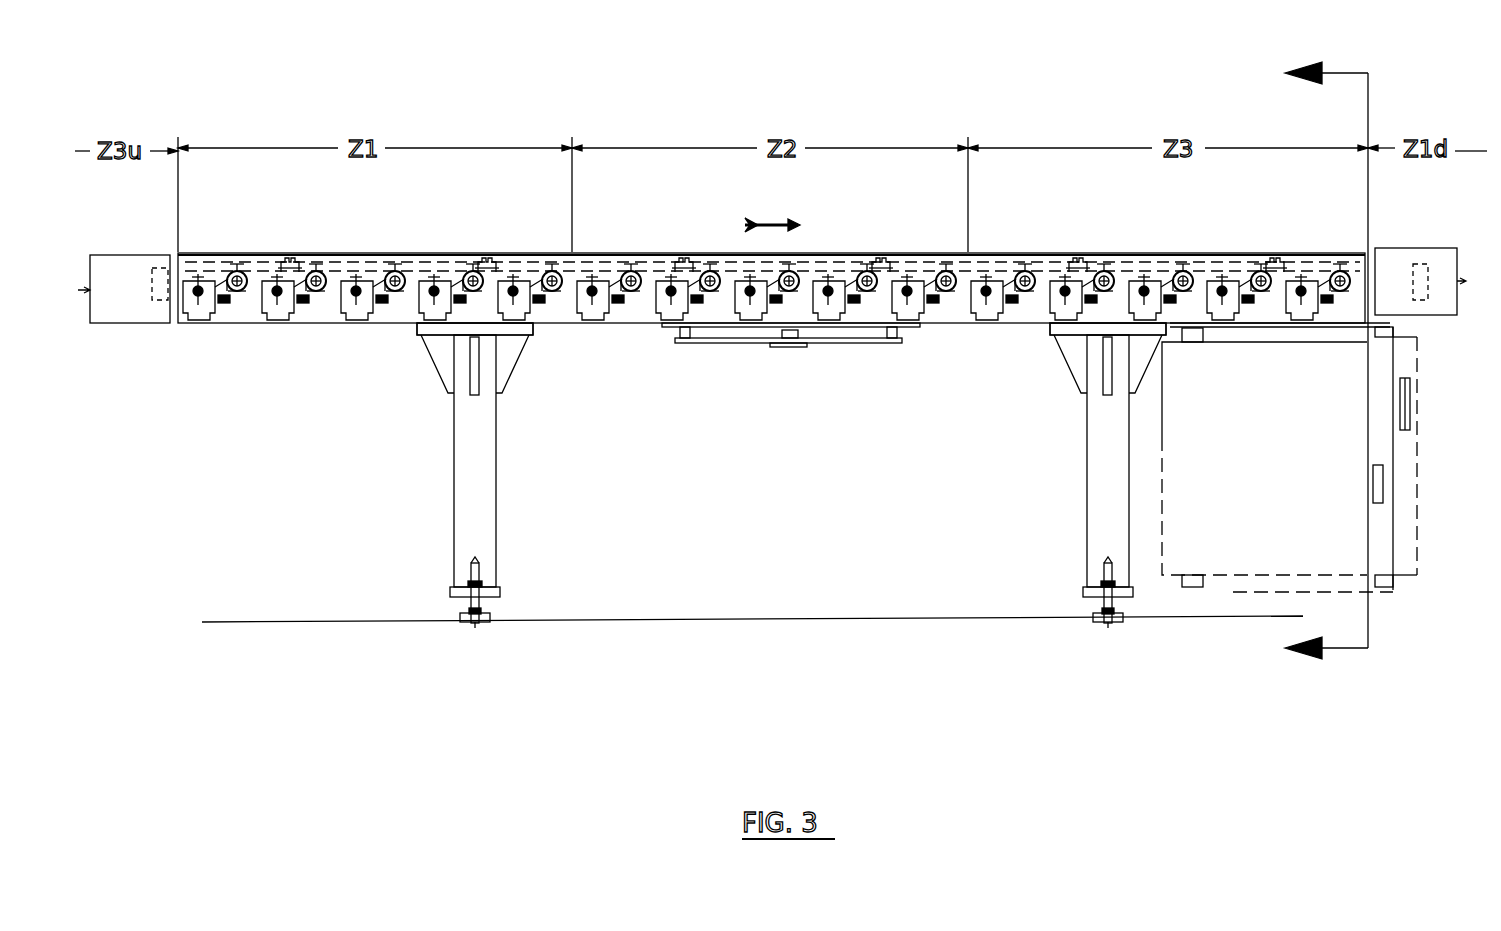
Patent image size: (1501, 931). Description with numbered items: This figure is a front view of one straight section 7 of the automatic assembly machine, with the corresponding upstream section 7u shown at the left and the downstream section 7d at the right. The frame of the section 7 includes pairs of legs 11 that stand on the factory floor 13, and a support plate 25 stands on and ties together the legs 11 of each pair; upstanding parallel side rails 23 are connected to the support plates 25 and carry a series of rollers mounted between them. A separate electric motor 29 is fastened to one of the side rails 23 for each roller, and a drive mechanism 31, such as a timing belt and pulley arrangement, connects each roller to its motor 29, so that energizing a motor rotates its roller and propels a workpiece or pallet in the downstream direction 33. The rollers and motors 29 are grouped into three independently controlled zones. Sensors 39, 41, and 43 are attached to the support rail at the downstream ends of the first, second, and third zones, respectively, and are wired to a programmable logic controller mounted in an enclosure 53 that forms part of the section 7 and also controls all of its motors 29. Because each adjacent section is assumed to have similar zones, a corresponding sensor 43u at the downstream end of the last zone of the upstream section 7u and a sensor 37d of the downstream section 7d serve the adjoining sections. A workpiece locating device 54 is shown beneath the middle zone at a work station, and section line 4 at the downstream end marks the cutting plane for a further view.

The straight section 7 is at (258, 325).
The upstream section 7u is at (105, 250).
The downstream section 7d is at (1413, 325).
The upstream transfer pad 43u is at (172, 255).
The downstream transfer pad 37d is at (1418, 262).
The drive mechanism 31 is at (208, 323).
The electric motor 29 is at (346, 326).
The support plate 25 is at (418, 340).
The legs 11 is at (478, 488).
The sensor 39 is at (568, 315).
The workpiece locating device 54 is at (750, 353).
The side rails 23 is at (632, 310).
The sensor 41 is at (948, 317).
The sensor 43 is at (1345, 312).
The enclosure 53 is at (1162, 490).
The factory floor 13 is at (302, 622).
The downstream direction 33 is at (776, 217).
The section line 4- 4 is at (1315, 363).